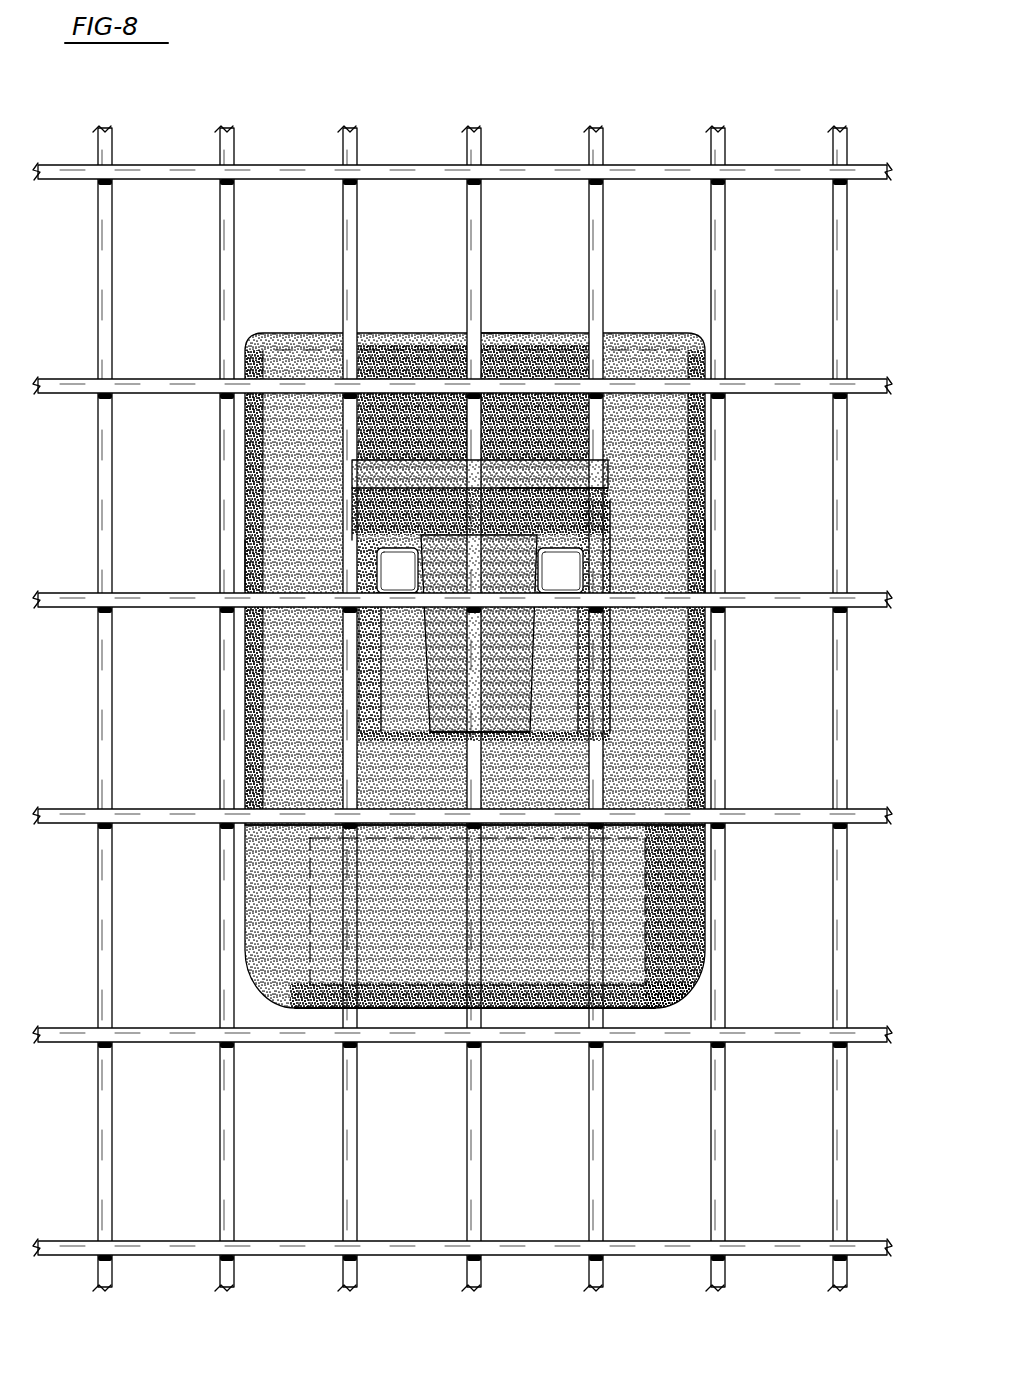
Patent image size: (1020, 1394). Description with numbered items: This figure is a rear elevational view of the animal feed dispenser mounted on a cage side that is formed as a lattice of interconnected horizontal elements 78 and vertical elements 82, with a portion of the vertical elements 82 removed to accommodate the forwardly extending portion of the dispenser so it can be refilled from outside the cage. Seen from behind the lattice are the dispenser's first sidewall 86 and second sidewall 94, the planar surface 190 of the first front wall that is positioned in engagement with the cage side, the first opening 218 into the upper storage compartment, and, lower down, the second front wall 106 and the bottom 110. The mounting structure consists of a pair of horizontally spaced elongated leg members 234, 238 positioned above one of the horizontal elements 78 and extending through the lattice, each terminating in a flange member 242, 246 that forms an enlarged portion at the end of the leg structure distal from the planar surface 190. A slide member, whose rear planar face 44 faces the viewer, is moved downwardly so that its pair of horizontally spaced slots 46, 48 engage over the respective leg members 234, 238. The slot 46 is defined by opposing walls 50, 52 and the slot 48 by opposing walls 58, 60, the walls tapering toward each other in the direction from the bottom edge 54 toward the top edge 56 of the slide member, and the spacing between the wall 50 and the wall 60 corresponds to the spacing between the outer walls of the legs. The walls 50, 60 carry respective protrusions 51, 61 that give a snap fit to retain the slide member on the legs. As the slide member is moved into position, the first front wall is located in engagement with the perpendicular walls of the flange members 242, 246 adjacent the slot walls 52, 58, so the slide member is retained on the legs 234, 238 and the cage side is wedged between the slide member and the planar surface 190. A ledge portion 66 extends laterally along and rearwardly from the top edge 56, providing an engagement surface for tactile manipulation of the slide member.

The rear planar face 44 is at (498, 600).
The slot 46 is at (393, 682).
The slot 48 is at (556, 683).
The wall 50 is at (387, 642).
The protrusion 51 is at (290, 593).
The wall 52 is at (397, 705).
The bottom edge 54 is at (448, 738).
The top edge 56 is at (430, 460).
The wall 58 is at (617, 711).
The wall 60 is at (555, 641).
The protrusion 61 is at (617, 597).
The ledge portion 66 is at (527, 473).
The horizontal elements 78 is at (63, 181).
The vertical elements 82 is at (108, 150).
The first sidewall 86 is at (245, 563).
The second sidewall 94 is at (704, 549).
The second front wall 106 is at (443, 912).
The bottom 110 is at (533, 1008).
The planar surface 190 is at (272, 498).
The first opening 218 is at (489, 334).
The leg member 234 is at (397, 548).
The leg member 238 is at (612, 505).
The flange member 242 is at (397, 568).
The flange member 246 is at (568, 572).